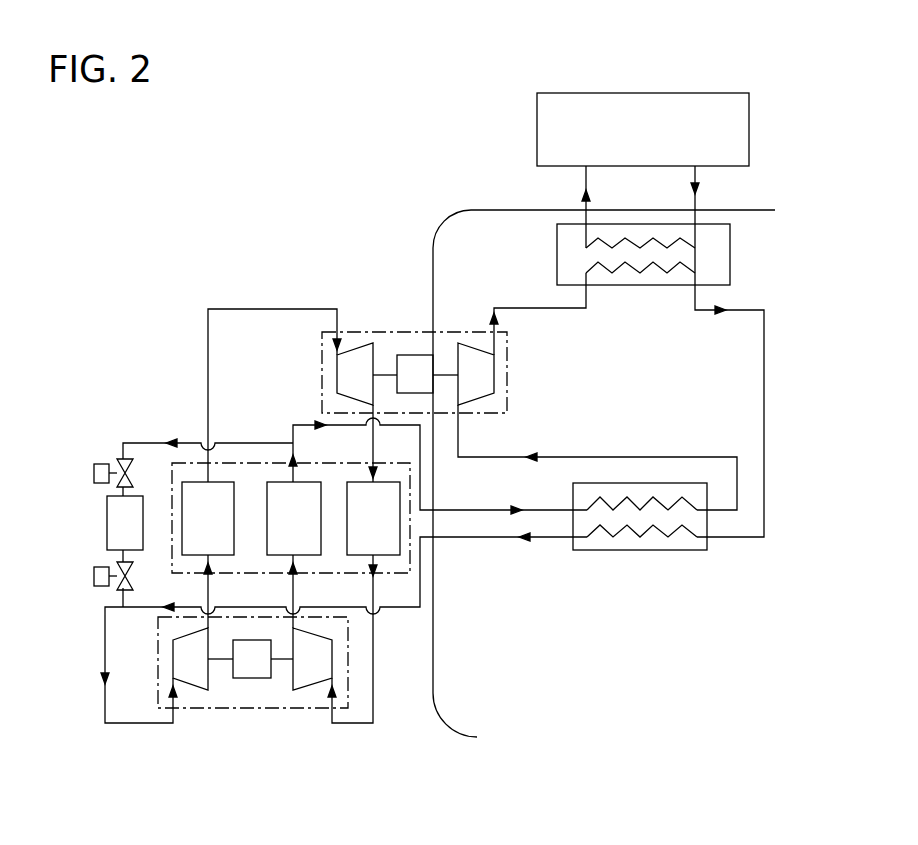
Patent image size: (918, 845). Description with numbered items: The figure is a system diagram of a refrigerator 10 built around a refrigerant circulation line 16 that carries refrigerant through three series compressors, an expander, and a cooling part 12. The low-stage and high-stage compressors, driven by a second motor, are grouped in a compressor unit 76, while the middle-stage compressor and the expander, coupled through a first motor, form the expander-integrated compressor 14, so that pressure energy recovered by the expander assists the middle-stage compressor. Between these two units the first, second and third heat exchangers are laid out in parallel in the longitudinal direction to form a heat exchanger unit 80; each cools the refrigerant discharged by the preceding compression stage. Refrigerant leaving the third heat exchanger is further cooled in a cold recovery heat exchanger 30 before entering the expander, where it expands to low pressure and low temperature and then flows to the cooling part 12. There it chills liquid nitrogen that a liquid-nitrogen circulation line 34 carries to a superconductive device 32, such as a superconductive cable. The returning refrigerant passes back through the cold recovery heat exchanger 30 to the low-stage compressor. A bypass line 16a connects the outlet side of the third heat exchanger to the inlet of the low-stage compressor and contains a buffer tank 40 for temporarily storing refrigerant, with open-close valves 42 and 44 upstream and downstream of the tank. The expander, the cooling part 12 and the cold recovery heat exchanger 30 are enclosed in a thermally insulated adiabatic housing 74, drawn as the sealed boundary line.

The refrigerator 10 is at (740, 47).
The cooling part 12 is at (732, 252).
The expander-integrated compressor 14 is at (390, 330).
The refrigerant circulation line 16 is at (262, 306).
The bypass line 16a is at (150, 440).
The cold recovery heat exchanger 30 is at (607, 551).
The superconductive device 32 is at (656, 147).
The liquid-nitrogen circulation line 34 is at (706, 182).
The buffer tank 40 is at (107, 525).
The open-close valve 42 is at (94, 473).
The open-close valve 44 is at (94, 576).
The adiabatic housing 74 is at (448, 208).
The compressor unit 76 is at (240, 710).
The heat exchanger unit 80 is at (243, 462).